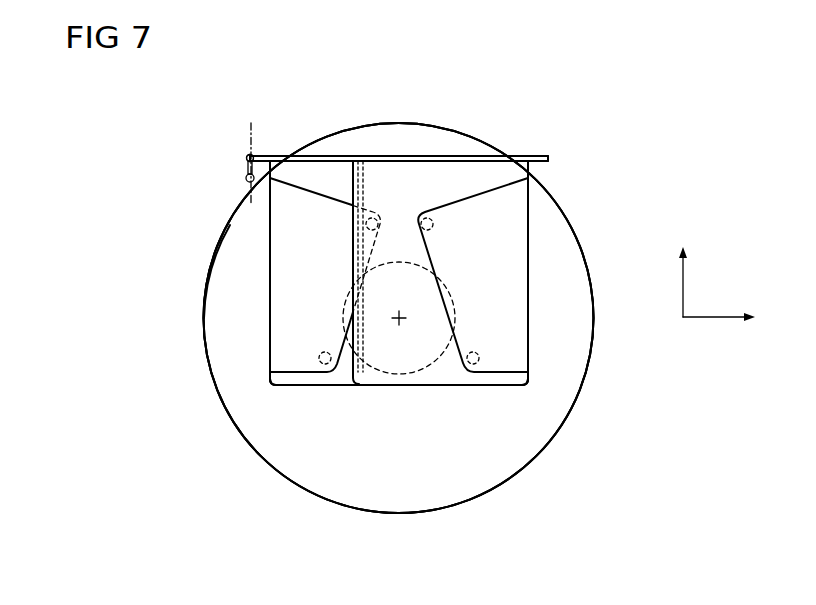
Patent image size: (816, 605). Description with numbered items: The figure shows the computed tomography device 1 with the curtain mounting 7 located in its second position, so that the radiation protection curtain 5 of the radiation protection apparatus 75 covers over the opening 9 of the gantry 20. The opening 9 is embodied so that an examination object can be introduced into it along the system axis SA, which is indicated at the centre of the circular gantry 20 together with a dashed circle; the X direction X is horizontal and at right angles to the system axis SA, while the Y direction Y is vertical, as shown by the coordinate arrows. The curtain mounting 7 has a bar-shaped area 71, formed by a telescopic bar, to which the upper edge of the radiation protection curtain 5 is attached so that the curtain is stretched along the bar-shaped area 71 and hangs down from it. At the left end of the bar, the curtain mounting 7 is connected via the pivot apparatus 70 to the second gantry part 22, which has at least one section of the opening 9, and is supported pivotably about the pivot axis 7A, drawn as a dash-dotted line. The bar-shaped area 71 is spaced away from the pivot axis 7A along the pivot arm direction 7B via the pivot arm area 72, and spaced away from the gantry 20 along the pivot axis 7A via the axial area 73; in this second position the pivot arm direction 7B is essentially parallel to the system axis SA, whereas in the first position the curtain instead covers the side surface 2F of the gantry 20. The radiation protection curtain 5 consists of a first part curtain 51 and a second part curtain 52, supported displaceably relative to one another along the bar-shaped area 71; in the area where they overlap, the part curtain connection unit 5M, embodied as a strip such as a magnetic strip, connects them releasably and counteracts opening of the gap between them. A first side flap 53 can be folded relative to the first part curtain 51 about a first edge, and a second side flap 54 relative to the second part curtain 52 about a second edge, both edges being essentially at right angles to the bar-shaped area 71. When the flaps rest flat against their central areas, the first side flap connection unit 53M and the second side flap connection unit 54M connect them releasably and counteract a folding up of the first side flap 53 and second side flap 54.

The computed tomography device 1 is at (279, 108).
The gantry 20 is at (399, 318).
The side surface 2F is at (220, 230).
The second gantry part 22 is at (213, 330).
The radiation protection curtain 5 is at (256, 288).
The radiation protection apparatus 75 is at (399, 273).
The part curtain connection unit 5M is at (363, 183).
The curtain mounting 7 is at (470, 156).
The bar-shaped area 71 is at (399, 158).
The pivot axis 7A is at (248, 122).
The pivot arm area 72 is at (247, 156).
The pivot arm direction 7B is at (250, 158).
The axial area 73 is at (246, 165).
The pivot apparatus 70 is at (246, 181).
The opening 9 is at (386, 376).
The first part curtain 51 is at (328, 180).
The second part curtain 52 is at (397, 192).
The first side flap 53 is at (297, 338).
The second side flap 54 is at (508, 340).
The first side flap connection unit 53M is at (327, 366).
The second side flap connection unit 54M is at (475, 366).
The system axis SA is at (399, 322).
The X direction X is at (712, 318).
The Y direction Y is at (683, 285).